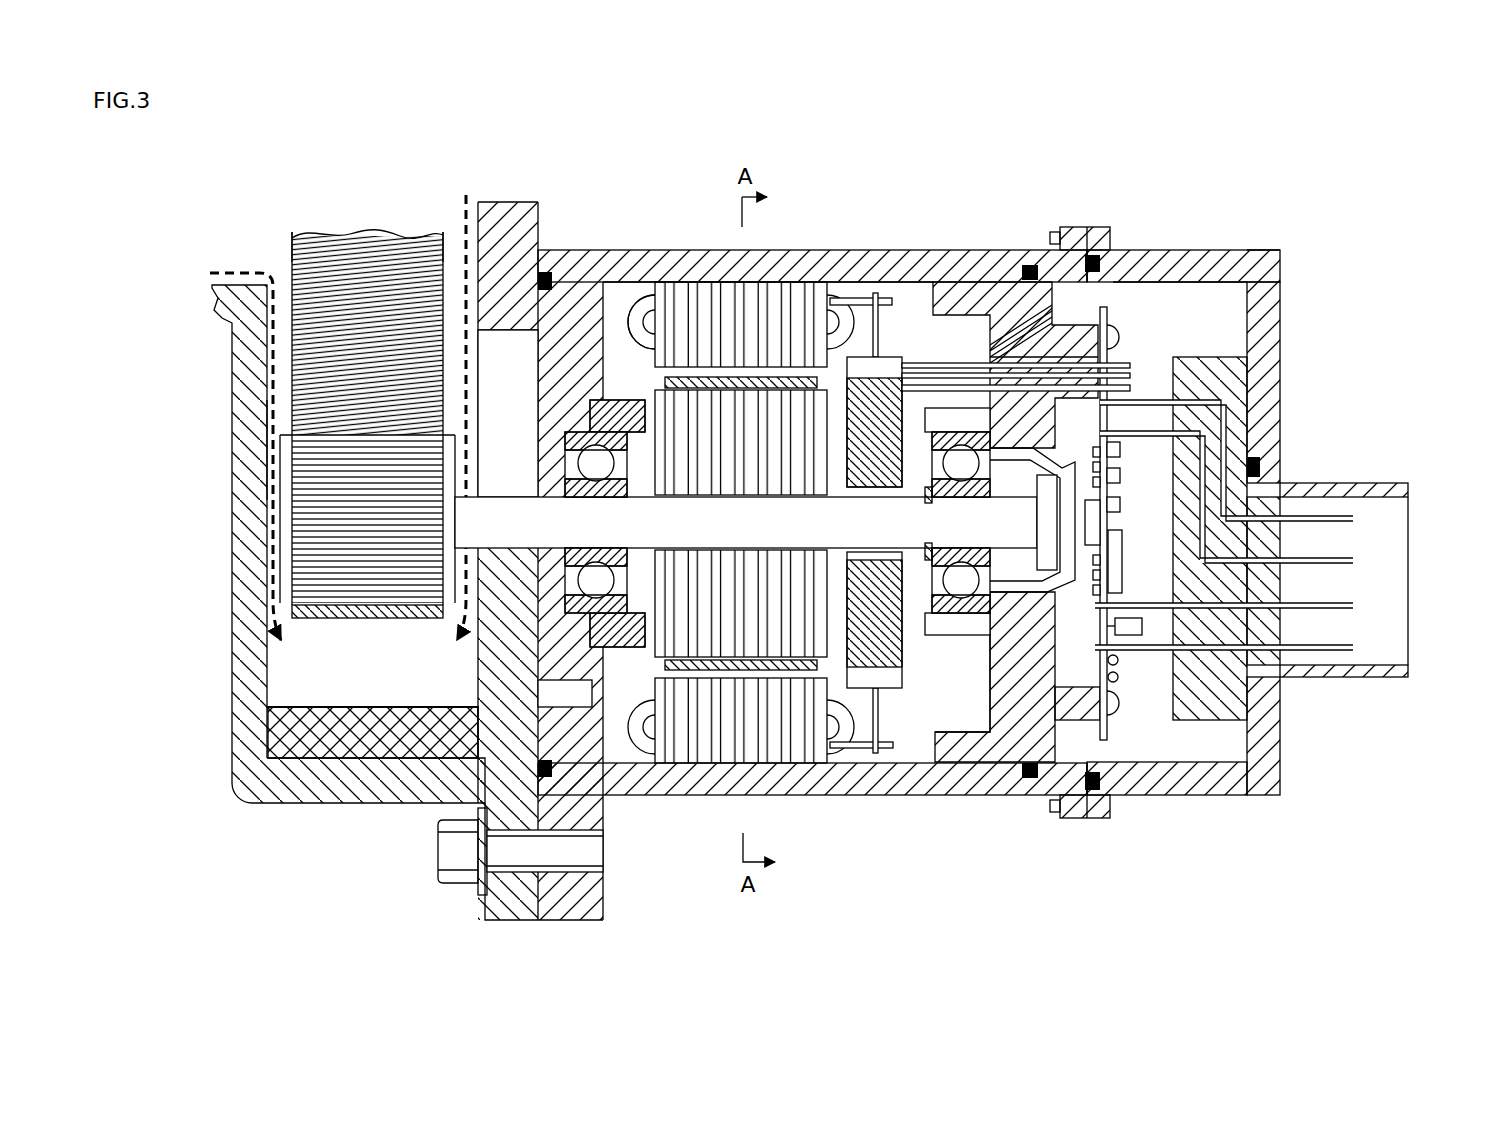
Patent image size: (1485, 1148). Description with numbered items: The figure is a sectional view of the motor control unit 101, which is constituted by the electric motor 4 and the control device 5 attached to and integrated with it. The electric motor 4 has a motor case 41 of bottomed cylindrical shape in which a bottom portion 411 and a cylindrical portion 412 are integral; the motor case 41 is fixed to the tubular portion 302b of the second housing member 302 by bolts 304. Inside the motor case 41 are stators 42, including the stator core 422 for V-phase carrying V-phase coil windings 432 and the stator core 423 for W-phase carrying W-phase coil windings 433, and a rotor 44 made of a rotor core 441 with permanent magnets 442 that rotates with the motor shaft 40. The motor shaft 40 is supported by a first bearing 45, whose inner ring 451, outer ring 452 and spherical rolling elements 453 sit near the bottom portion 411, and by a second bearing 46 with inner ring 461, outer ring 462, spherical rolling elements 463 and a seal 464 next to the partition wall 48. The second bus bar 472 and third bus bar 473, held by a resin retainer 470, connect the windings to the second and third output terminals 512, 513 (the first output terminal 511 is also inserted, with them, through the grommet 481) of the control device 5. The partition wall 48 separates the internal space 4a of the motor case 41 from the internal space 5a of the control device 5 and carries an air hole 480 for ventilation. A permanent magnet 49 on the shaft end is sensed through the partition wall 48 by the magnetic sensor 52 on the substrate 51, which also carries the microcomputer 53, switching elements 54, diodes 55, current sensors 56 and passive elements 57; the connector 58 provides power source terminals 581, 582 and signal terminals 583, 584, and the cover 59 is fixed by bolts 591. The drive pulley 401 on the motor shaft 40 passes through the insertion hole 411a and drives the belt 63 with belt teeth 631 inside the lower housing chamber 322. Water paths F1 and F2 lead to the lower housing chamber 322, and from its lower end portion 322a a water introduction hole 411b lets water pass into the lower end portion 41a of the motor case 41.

The electric motor 4 is at (797, 557).
The internal space of the motor case 4a is at (903, 290).
The control device 5 is at (1187, 532).
The internal space of the control device 5a is at (1120, 292).
The motor shaft 40 is at (735, 535).
The motor case 41 is at (782, 561).
The lower end portion of the internal space 41a is at (905, 740).
The bottom portion 411 is at (607, 767).
The insertion hole 411a is at (548, 490).
The water introduction hole 411b is at (562, 690).
The cylindrical portion 412 is at (670, 785).
The stator 42 is at (652, 352).
The stator core for V-phase 422 is at (780, 753).
The stator core for W-phase 423 is at (737, 290).
The V-phase coil windings 432 is at (858, 748).
The W-phase coil windings 433 is at (858, 298).
The rotor 44 is at (722, 505).
The rotor core 441 is at (692, 393).
The permanent magnets 442 is at (706, 378).
The first bearing 45 is at (602, 540).
The inner ring 451 is at (575, 560).
The outer ring 452 is at (610, 562).
The spherical rolling elements 453 is at (598, 565).
The second bearing 46 is at (946, 562).
The inner ring 461 is at (948, 560).
The outer ring 462 is at (985, 580).
The spherical rolling elements 463 is at (960, 570).
The seal 464 is at (927, 550).
The retainer 470 is at (903, 640).
The second bus bar 472 is at (880, 710).
The third bus bar 473 is at (880, 327).
The partition wall 48 is at (950, 300).
The air hole 480 is at (1010, 330).
The grommet 481 is at (1003, 377).
The permanent magnet 49 is at (1045, 490).
The substrate 51 is at (1120, 708).
The first output terminal 511 is at (1123, 360).
The second output terminal 512 is at (1128, 372).
The third output terminal 513 is at (1128, 385).
The magnetic sensor 52 is at (1093, 523).
The microcomputer 53 is at (1122, 545).
The switching elements 54 is at (1120, 475).
The diodes 55 is at (1093, 482).
The current sensors 56 is at (1093, 590).
The passive elements 57 is at (1128, 635).
The connector 58 is at (1335, 483).
The power source terminal 581 is at (1358, 517).
The power source terminal 582 is at (1358, 560).
The signal terminal 583 is at (1358, 605).
The signal terminal 584 is at (1358, 647).
The cover 59 is at (1183, 250).
The bolts 591 is at (1052, 238).
The belt 63 is at (292, 268).
The belt teeth 631 is at (460, 242).
The motor control unit 101 is at (1305, 242).
The second housing member 302 is at (235, 388).
The tubular portion 302b is at (247, 453).
The bolts 304 is at (445, 855).
The lower housing chamber 322 is at (389, 670).
The lower end portion of the lower housing chamber 322a is at (322, 690).
The drive pulley 401 is at (300, 515).
The arrow F1 is at (268, 565).
The arrow F2 is at (463, 195).